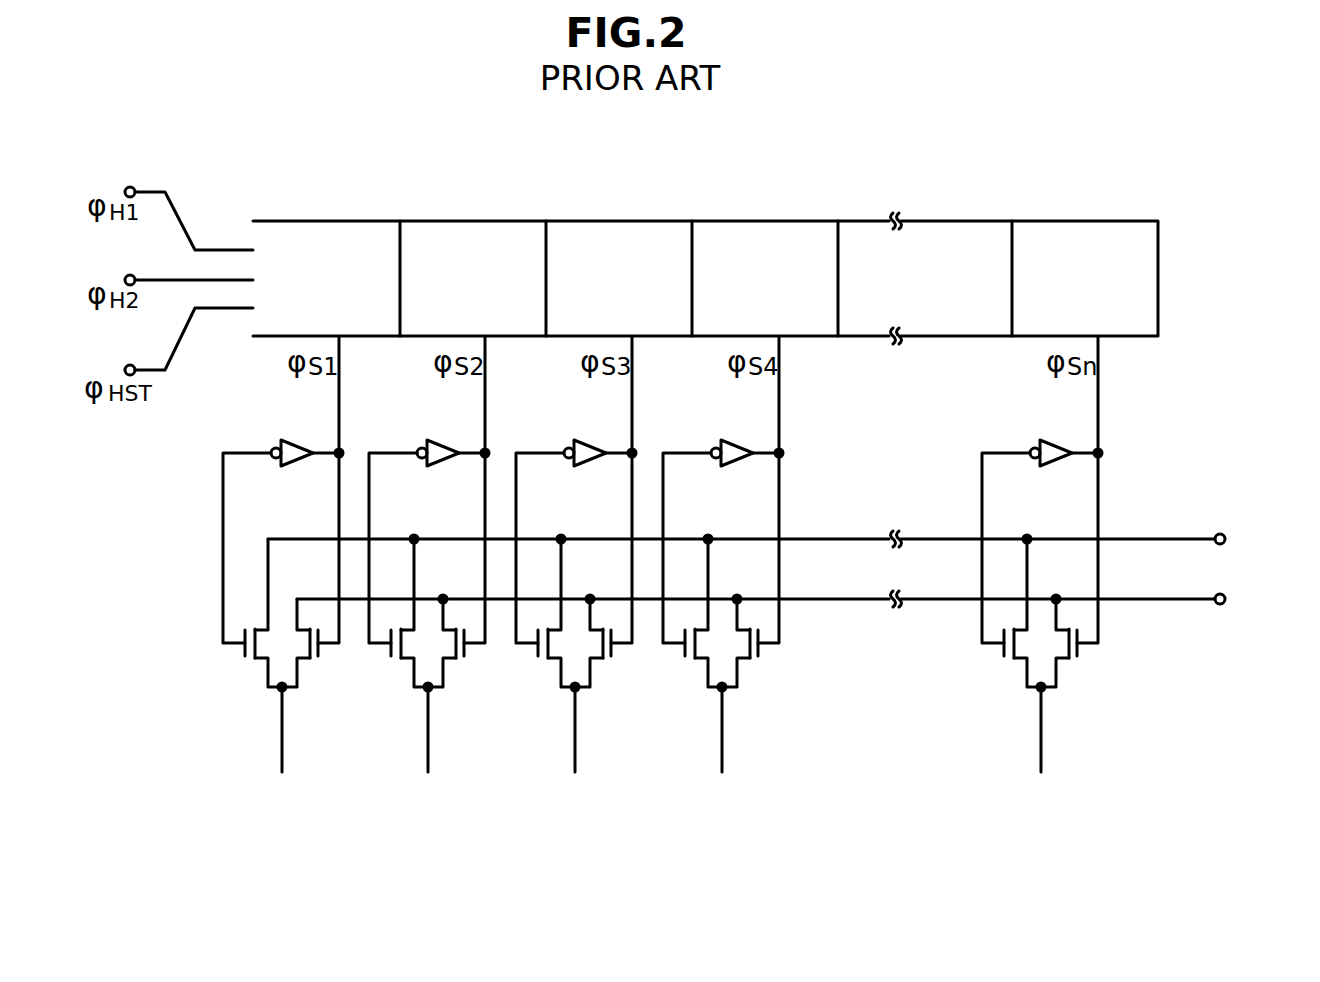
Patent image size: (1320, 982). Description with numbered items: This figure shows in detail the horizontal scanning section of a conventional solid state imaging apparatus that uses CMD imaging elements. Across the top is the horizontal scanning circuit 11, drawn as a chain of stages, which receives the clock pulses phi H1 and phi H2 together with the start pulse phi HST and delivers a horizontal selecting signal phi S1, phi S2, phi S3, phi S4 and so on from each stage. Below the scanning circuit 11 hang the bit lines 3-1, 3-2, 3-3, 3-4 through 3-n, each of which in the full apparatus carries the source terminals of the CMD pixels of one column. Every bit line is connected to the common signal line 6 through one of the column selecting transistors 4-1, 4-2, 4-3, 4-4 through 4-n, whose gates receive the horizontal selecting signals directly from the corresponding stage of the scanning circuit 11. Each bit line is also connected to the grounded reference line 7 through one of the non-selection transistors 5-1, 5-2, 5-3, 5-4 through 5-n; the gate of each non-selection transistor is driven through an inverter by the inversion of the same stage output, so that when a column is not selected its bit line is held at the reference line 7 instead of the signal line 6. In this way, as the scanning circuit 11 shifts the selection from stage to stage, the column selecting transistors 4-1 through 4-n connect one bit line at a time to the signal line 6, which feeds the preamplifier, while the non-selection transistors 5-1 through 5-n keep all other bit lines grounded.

The horizontal scanning circuit 11 is at (1074, 221).
The reference line 7 is at (1155, 539).
The signal line 6 is at (1148, 603).
The bit line 3-1 is at (282, 750).
The bit line 3-2 is at (428, 750).
The bit line 3-3 is at (575, 750).
The bit line 3-4 is at (722, 750).
The bit line 3-n is at (1041, 750).
The column selecting transistor 4-1 is at (302, 664).
The column selecting transistor 4-2 is at (458, 662).
The column selecting transistor 4-3 is at (605, 662).
The column selecting transistor 4-4 is at (752, 662).
The column selecting transistor 4-n is at (1072, 662).
The non-selection transistor 5-1 is at (249, 664).
The non-selection transistor 5-2 is at (391, 632).
The non-selection transistor 5-3 is at (538, 632).
The non-selection transistor 5-4 is at (685, 632).
The non-selection transistor 5-n is at (1004, 632).